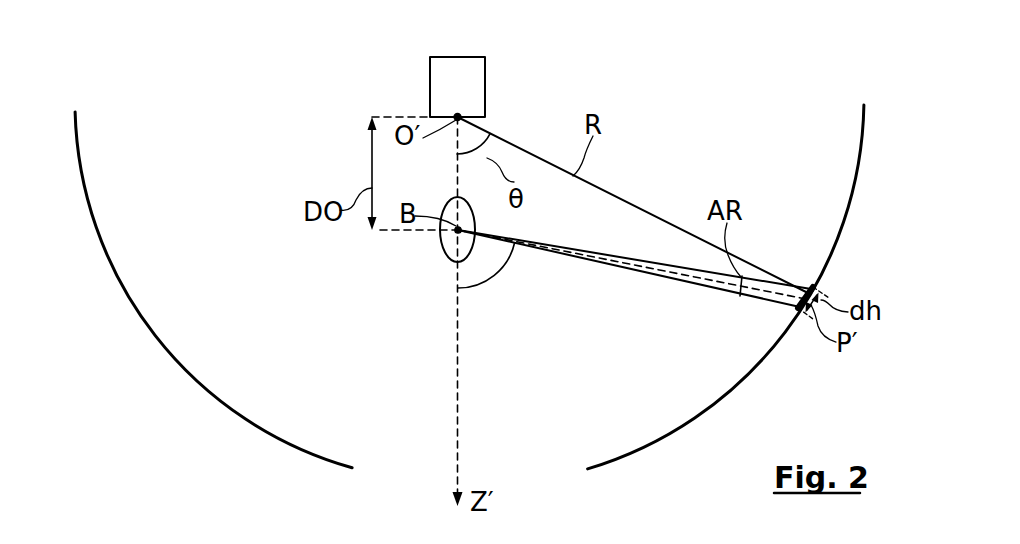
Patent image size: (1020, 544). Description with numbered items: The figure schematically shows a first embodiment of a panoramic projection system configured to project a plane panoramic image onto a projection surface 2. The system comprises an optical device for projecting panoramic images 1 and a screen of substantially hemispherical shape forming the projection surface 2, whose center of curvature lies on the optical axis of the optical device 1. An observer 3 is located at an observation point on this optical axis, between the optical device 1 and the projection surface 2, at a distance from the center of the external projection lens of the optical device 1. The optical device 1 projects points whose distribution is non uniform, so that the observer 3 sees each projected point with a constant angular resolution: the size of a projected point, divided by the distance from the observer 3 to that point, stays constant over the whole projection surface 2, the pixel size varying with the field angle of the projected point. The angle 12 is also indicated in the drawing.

The optical device for projecting panoramic images 1 is at (438, 66).
The projection surface 2 is at (85, 178).
The observer 3 is at (443, 243).
The viewing angle 12 is at (500, 278).